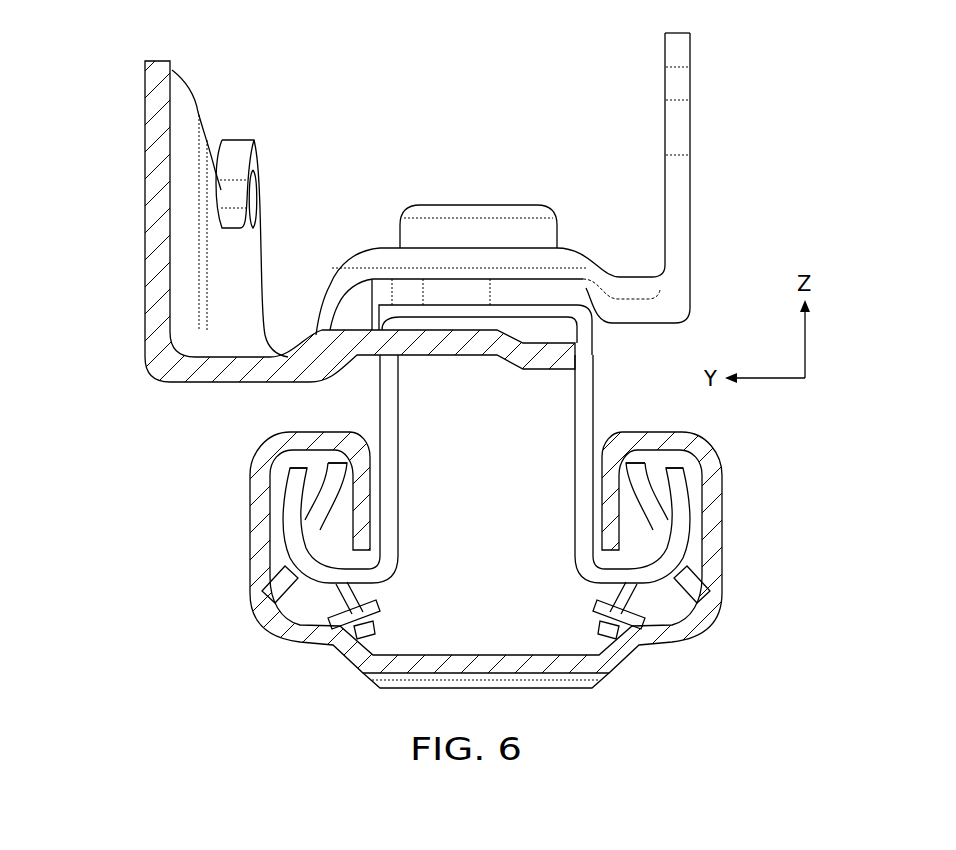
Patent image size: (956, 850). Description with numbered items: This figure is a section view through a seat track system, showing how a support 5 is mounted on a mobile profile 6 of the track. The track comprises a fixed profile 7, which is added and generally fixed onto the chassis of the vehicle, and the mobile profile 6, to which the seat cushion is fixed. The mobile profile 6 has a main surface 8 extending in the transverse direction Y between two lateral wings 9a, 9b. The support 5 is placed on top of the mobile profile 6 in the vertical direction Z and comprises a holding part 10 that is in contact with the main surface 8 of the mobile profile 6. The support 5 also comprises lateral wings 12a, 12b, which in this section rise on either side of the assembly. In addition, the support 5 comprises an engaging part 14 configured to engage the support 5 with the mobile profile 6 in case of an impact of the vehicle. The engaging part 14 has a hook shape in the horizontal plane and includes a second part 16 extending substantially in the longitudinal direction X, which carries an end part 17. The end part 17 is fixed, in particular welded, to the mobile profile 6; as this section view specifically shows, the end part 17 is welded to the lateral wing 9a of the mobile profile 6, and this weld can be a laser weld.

The support 5 is at (722, 141).
The mobile profile 6 is at (486, 472).
The fixed profile 7 is at (622, 664).
The main surface 8 is at (540, 300).
The lateral wing 9a is at (593, 400).
The lateral wing 9b is at (378, 392).
The holding part 10 is at (477, 288).
The lateral wing 12a is at (686, 200).
The lateral wing 12b is at (146, 222).
The engaging part 14 is at (466, 385).
The second part 16 is at (575, 454).
The end part 17 is at (578, 358).